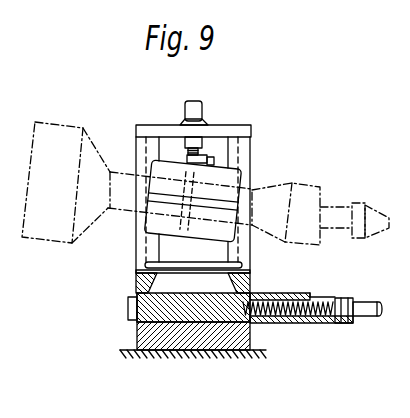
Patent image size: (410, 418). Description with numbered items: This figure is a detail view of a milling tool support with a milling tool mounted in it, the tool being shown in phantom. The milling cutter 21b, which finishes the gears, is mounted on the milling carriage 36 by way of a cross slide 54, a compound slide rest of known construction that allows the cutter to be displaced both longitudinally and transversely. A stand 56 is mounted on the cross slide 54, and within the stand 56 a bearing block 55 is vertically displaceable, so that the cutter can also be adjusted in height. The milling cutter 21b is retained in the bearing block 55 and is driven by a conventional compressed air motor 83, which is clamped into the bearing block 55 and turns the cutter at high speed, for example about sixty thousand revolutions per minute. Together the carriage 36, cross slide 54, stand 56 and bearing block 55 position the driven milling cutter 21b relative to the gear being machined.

The milling cutter 21b is at (373, 212).
The milling carriage 36 is at (250, 352).
The cross slide 54 is at (152, 297).
The bearing block 55 is at (212, 158).
The stand 56 is at (251, 152).
The compressed air motor 83 is at (58, 241).